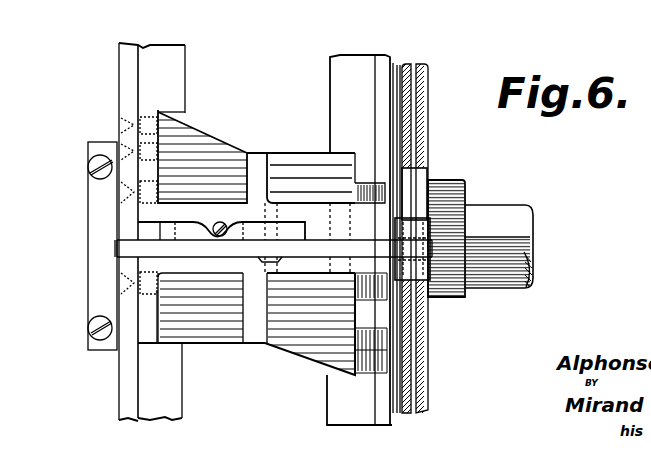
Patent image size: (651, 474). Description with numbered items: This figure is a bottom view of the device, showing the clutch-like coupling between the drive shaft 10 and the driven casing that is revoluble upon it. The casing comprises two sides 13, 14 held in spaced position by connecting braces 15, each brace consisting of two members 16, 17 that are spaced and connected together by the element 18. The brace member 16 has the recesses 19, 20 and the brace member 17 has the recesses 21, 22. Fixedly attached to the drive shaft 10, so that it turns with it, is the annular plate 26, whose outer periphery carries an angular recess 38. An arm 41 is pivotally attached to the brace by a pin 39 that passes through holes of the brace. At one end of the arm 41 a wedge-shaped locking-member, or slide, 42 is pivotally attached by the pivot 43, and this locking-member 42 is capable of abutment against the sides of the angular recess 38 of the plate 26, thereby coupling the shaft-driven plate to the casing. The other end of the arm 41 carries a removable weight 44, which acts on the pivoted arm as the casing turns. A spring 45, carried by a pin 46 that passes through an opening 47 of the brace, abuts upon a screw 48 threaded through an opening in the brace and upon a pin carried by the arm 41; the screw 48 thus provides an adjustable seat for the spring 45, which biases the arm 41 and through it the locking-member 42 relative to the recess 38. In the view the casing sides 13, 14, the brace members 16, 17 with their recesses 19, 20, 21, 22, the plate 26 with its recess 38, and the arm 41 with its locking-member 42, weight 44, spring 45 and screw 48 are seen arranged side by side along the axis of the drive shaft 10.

The drive shaft 10 is at (512, 215).
The casing side 13 is at (127, 70).
The casing side 14 is at (383, 73).
The connecting brace 15 is at (268, 358).
The brace member 16 is at (147, 310).
The brace member 17 is at (398, 155).
The connecting element 18 is at (252, 180).
The recess 19 is at (170, 147).
The recess 20 is at (327, 157).
The recess 21 is at (195, 330).
The recess 22 is at (318, 340).
The annular plate 26 is at (432, 72).
The angular recess 38 is at (412, 63).
The pin 39 is at (330, 187).
The arm 41 is at (297, 240).
The locking-member 42 is at (410, 183).
The pivot 43 is at (463, 189).
The removable weight 44 is at (102, 183).
The spring 45 is at (183, 232).
The pin 46 is at (167, 205).
The opening 47 is at (160, 212).
The screw 48 is at (218, 290).